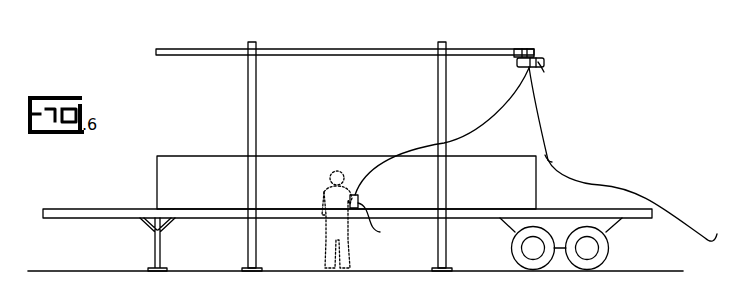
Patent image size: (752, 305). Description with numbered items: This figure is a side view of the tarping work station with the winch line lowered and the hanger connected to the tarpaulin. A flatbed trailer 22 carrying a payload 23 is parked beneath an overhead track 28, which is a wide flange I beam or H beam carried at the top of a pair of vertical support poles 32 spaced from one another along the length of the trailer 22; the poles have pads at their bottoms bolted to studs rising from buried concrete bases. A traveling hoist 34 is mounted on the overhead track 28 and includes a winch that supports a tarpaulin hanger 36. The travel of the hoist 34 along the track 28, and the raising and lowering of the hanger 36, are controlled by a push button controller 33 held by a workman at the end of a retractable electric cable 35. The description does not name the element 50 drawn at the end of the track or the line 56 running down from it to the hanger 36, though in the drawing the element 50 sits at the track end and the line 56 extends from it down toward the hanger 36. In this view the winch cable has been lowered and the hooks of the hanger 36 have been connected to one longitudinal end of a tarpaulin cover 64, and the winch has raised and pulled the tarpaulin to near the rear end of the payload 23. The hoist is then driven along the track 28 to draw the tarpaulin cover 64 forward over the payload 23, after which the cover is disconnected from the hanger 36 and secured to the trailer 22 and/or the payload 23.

The flatbed trailer 22 is at (100, 209).
The payload 23 is at (230, 155).
The overhead track 28 is at (363, 48).
The vertical support poles 32 is at (255, 82).
The push button controller 33 is at (375, 219).
The traveling hoist 34 is at (544, 66).
The retractable electric cable 35 is at (437, 144).
The tarpaulin hanger 36 is at (553, 160).
The tool balancer 50 is at (530, 49).
The cable 56 is at (541, 125).
The tarpaulin cover 64 is at (603, 184).